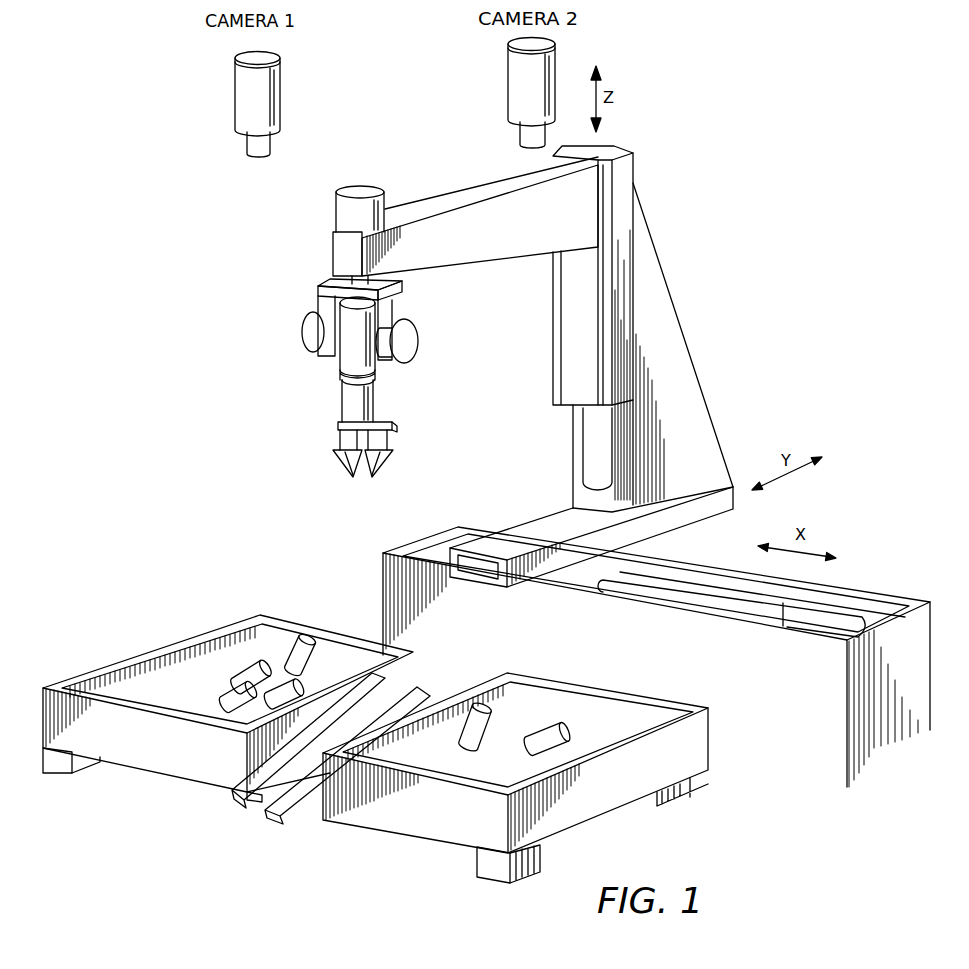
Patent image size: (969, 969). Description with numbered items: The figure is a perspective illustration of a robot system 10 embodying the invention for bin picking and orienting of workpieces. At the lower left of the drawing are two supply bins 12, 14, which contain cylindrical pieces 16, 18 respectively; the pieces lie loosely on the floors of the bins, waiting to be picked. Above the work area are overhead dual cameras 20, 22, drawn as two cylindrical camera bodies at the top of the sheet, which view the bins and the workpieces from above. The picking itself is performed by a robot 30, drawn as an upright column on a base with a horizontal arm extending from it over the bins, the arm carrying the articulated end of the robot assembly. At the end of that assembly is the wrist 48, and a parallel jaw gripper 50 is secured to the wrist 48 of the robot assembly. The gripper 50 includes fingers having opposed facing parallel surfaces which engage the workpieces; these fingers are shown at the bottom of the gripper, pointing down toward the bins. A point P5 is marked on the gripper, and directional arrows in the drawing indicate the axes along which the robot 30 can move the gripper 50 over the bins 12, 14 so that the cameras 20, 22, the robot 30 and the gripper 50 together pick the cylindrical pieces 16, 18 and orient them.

The robot system 10 is at (270, 309).
The supply bin 12 is at (276, 672).
The supply bin 14 is at (566, 733).
The cylindrical pieces 16 is at (304, 641).
The cylindrical pieces 18 is at (484, 708).
The camera 20 is at (282, 106).
The camera 22 is at (508, 80).
The robot 30 is at (511, 282).
The wrist 48 is at (403, 358).
The parallel jaw gripper 50 is at (330, 389).
The gripper position point P5 is at (353, 404).